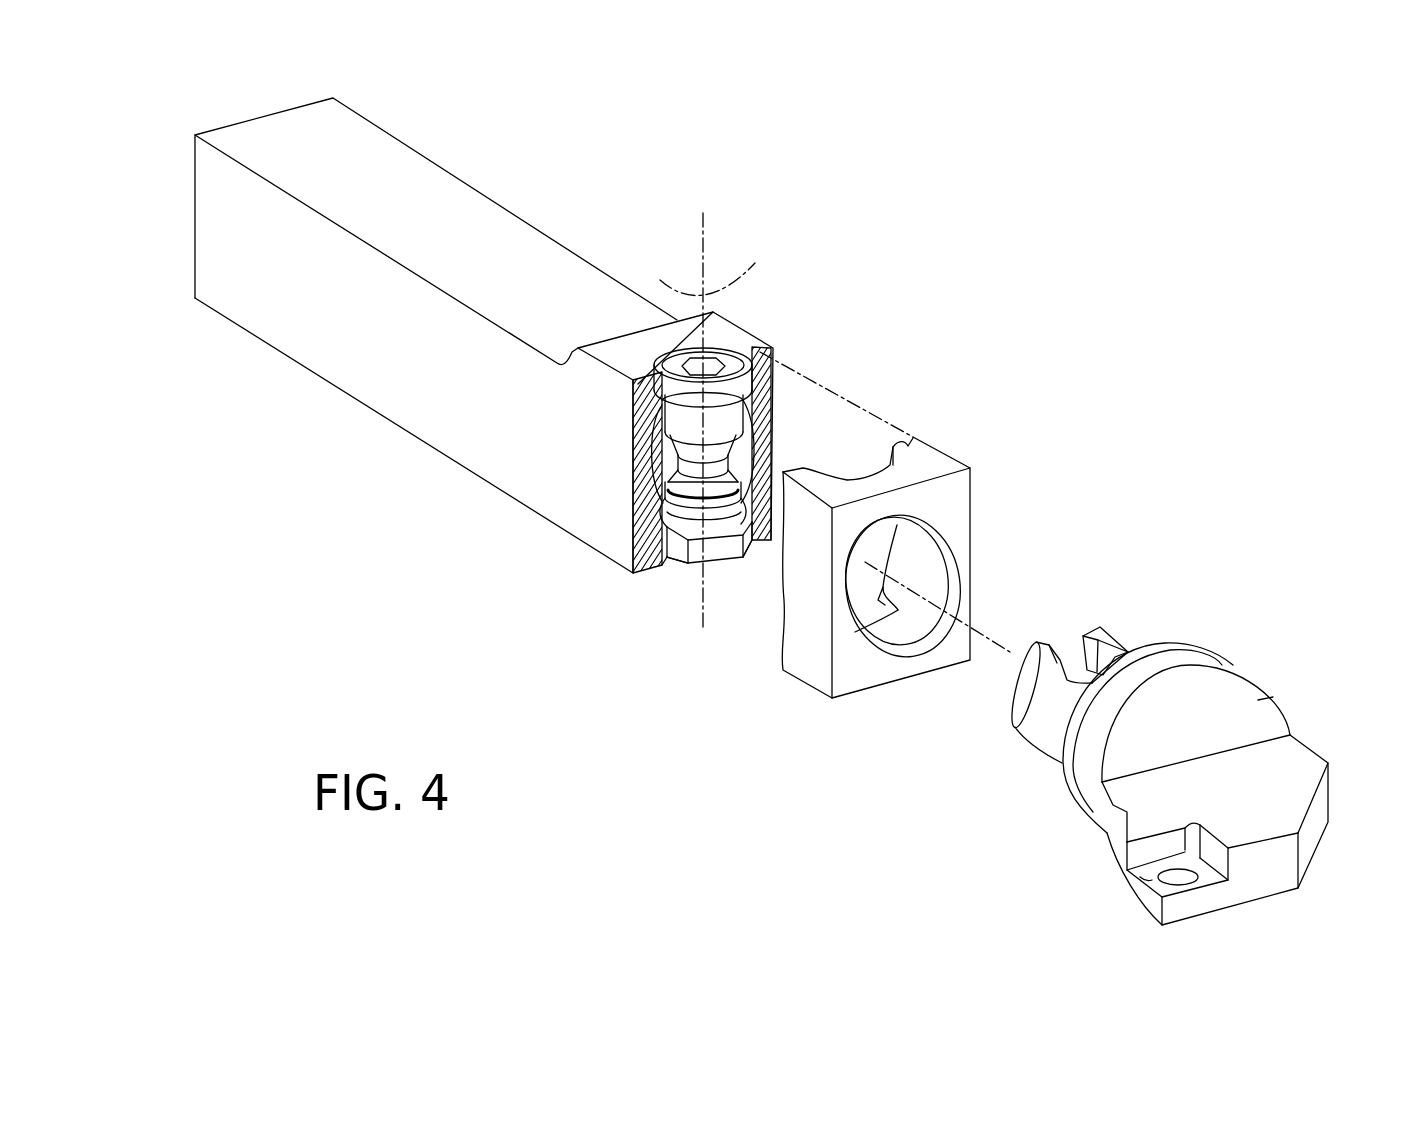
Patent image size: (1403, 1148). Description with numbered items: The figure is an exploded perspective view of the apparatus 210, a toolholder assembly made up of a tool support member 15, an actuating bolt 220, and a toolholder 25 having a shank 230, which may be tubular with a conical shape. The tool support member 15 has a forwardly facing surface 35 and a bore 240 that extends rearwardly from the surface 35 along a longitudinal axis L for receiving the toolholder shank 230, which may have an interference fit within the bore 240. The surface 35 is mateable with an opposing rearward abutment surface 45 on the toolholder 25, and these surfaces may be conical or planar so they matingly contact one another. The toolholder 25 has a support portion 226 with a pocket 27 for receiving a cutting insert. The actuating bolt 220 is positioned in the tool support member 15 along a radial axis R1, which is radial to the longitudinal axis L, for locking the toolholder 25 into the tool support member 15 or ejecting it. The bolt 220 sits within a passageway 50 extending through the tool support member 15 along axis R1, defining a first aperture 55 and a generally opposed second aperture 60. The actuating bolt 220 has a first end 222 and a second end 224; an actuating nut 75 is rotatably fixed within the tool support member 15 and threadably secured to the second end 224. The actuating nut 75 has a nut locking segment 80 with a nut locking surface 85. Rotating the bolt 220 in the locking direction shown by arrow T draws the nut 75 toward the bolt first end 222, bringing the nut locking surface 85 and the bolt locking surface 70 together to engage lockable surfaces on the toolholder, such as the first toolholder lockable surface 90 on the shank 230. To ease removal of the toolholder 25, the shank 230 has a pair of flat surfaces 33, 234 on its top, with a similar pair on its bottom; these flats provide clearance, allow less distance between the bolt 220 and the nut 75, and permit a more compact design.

The tool support member 15 is at (482, 203).
The apparatus 210 is at (956, 293).
The first end 222 is at (780, 385).
The radial axis R1 is at (707, 235).
The arrow T is at (657, 268).
The first aperture 55 is at (735, 330).
The passageway 50 is at (745, 448).
The bolt locking surface 70 is at (670, 437).
The second end 224 is at (712, 480).
The nut locking surface 85 is at (670, 490).
The nut locking segment 80 is at (660, 530).
The actuating nut 75 is at (735, 540).
The second aperture 60 is at (671, 560).
The actuating bolt 220 is at (785, 395).
The forwardly facing surface 35 is at (944, 533).
The bore 240 is at (927, 553).
The longitudinal axis L is at (983, 630).
The shank 230 is at (1143, 575).
The flat surface 234 is at (1013, 652).
The flat surface 33 is at (1096, 628).
The first toolholder lockable surface 90 is at (1123, 652).
The rearward abutment surface 45 is at (1178, 635).
The toolholder 25 is at (1260, 700).
The support portion 226 is at (1303, 752).
The pocket 27 is at (1145, 877).